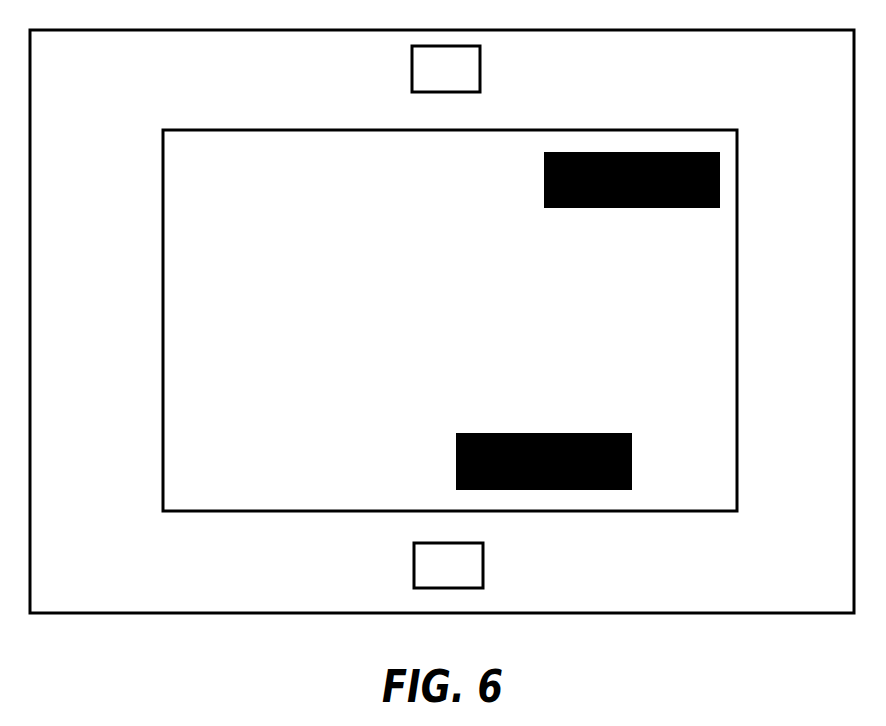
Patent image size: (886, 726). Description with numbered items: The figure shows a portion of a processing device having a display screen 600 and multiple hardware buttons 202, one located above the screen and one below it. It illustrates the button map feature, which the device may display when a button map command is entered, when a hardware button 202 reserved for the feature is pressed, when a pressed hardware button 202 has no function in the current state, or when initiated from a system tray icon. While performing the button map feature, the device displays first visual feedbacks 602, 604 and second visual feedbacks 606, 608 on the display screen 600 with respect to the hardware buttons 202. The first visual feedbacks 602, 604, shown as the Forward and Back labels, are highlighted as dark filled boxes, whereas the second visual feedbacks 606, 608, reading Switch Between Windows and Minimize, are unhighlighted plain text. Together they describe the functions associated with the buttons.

The hardware buttons 202 is at (447, 317).
The display screen 600 is at (498, 129).
The first visual feedback 602 is at (632, 152).
The first visual feedback 604 is at (546, 433).
The second visual feedback 606 is at (335, 158).
The second visual feedback 608 is at (341, 442).